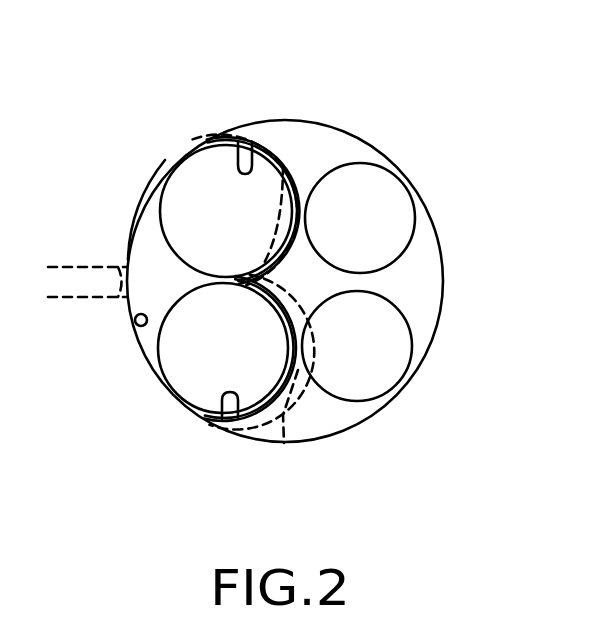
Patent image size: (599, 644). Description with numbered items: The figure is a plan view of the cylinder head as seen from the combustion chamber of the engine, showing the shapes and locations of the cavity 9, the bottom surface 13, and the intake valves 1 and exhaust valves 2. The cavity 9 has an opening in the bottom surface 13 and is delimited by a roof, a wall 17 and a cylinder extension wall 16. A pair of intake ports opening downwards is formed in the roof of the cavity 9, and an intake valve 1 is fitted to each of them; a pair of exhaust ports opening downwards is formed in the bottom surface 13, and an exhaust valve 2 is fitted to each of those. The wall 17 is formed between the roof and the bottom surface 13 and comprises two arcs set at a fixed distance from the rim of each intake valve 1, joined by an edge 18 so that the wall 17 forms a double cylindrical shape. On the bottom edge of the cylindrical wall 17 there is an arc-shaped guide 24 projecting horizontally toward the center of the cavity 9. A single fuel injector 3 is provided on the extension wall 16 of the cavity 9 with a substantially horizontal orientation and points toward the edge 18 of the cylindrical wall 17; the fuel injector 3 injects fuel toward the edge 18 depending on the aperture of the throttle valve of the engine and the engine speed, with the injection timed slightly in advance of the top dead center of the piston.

The intake valve 1 is at (197, 190).
The exhaust valve 2 is at (380, 192).
The fuel injector 3 is at (72, 298).
The cavity 9 is at (143, 248).
The bottom surface 13 is at (420, 257).
The cylinder extension wall 16 is at (143, 323).
The wall 17 is at (283, 165).
The edge 18 is at (305, 185).
The arc-shaped guide 24 is at (240, 140).